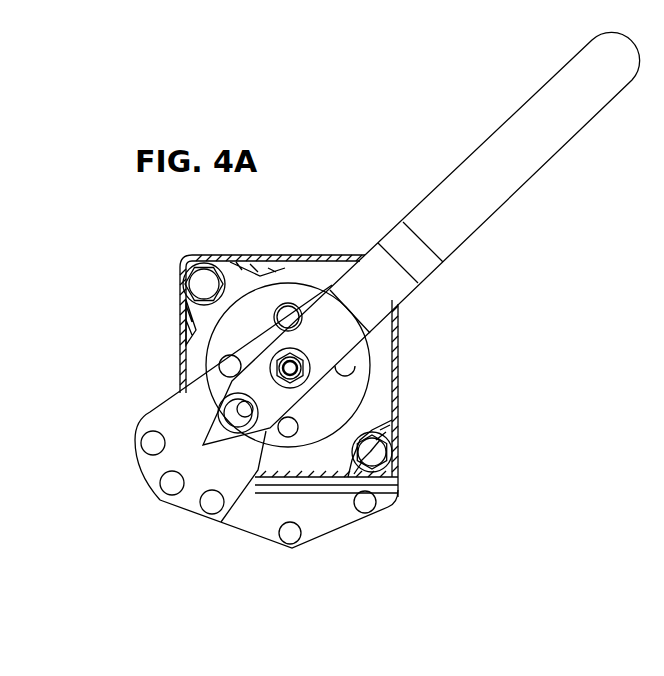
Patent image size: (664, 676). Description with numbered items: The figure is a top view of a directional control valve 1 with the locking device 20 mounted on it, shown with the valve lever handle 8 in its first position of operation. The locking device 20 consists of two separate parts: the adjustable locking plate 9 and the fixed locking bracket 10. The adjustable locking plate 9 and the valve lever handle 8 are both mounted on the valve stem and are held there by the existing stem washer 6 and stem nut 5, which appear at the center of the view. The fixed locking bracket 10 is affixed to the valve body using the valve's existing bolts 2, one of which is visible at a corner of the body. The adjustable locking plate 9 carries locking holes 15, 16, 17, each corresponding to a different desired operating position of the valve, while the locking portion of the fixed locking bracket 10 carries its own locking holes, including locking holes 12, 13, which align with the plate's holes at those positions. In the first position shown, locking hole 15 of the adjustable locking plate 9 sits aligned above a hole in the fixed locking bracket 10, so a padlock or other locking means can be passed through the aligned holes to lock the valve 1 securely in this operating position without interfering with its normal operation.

The directional control valve 1 is at (400, 355).
The bolts 2 is at (372, 452).
The stem nut 5 is at (272, 352).
The stem washer 6 is at (277, 381).
The valve lever handle 8 is at (433, 218).
The adjustable locking plate 9 is at (185, 425).
The fixed locking bracket 10 is at (332, 525).
The locking hole 12 is at (378, 507).
The locking hole 13 is at (293, 543).
The locking hole 15 is at (213, 512).
The locking hole 16 is at (167, 500).
The locking hole 17 is at (145, 458).
The locking device 20 is at (232, 492).